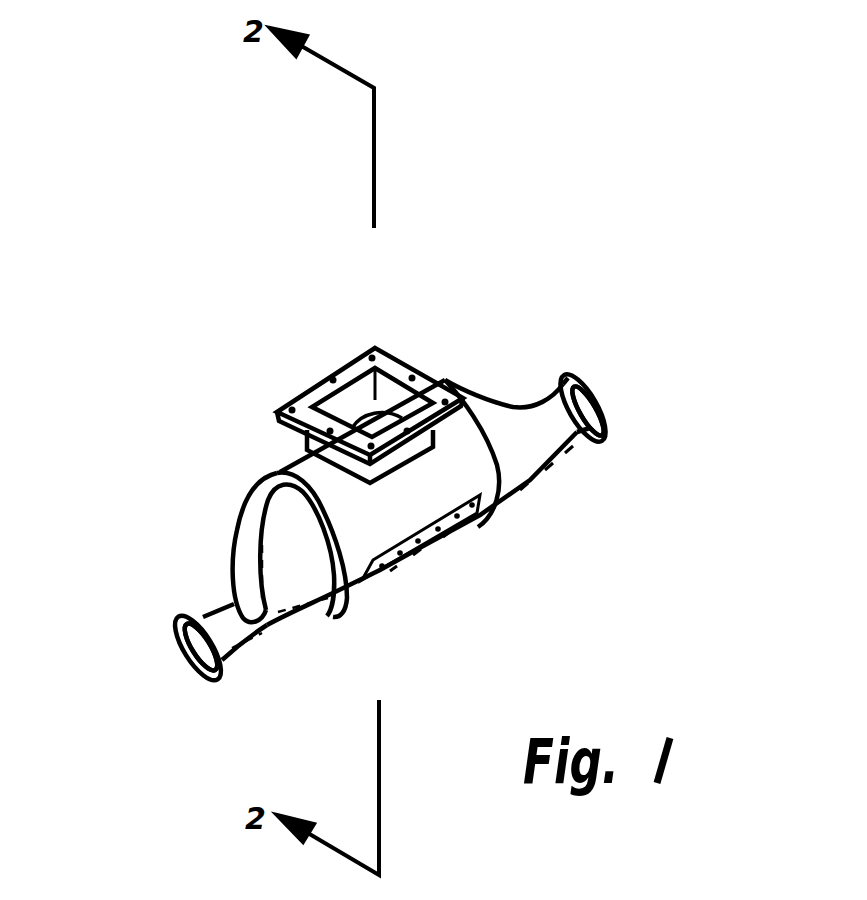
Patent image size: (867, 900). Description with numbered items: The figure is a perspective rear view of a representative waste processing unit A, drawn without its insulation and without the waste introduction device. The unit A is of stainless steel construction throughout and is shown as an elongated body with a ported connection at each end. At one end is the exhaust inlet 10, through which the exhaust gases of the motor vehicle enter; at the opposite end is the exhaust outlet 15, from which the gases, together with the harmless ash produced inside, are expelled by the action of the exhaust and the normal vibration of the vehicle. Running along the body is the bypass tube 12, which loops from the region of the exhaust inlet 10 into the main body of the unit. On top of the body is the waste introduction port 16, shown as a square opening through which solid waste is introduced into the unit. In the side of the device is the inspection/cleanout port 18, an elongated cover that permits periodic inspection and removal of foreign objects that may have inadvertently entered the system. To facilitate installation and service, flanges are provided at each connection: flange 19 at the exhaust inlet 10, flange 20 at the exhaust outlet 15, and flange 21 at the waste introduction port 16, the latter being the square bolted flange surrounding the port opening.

The exhaust inlet 10 is at (180, 660).
The bypass tube 12 is at (233, 538).
The exhaust outlet 15 is at (606, 391).
The waste introduction port 16 is at (343, 413).
The inspection/cleanout port 18 is at (407, 562).
The flange 19 is at (197, 683).
The flange 20 is at (604, 441).
The flange 21 is at (370, 357).
The waste processing unit A is at (461, 366).